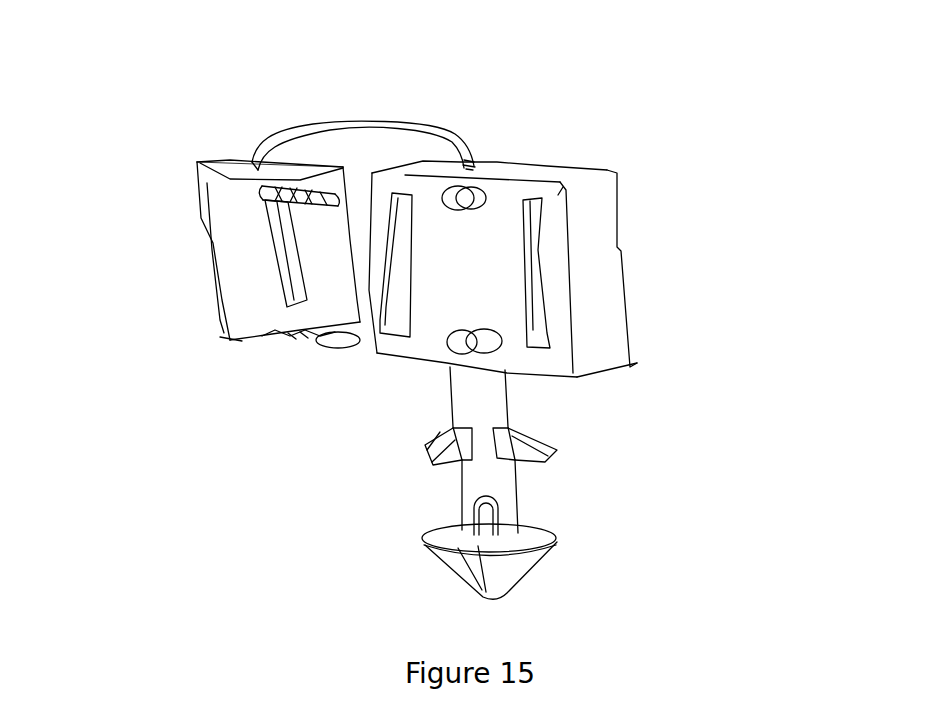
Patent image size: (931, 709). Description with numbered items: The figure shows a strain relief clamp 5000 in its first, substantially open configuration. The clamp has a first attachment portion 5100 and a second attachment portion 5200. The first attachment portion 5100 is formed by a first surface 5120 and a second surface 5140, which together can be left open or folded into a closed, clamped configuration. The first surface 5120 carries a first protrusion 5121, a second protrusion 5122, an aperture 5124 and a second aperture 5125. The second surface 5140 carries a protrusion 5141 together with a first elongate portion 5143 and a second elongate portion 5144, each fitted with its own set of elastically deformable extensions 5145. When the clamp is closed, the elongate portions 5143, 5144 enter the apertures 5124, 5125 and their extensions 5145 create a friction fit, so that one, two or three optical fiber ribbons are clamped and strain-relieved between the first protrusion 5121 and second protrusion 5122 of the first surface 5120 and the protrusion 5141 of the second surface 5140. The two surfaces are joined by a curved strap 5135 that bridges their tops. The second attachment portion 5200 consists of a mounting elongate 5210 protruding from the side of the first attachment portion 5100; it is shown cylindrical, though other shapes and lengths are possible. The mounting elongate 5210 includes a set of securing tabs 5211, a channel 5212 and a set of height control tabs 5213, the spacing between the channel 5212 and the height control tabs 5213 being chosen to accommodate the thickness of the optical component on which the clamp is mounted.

The strain relief clamp 5000 is at (438, 76).
The first attachment portion 5100 is at (612, 312).
The first surface 5120 is at (488, 225).
The first protrusion 5121 is at (537, 267).
The second protrusion 5122 is at (363, 337).
The aperture 5124 is at (467, 332).
The second aperture 5125 is at (470, 198).
The strap 5135 is at (463, 133).
The second surface 5140 is at (248, 222).
The protrusion 5141 is at (280, 268).
The first elongate portion 5143 is at (240, 332).
The second elongate portion 5144 is at (280, 178).
The elastically deformable extensions 5145 is at (300, 177).
The second attachment portion 5200 is at (485, 383).
The mounting elongate 5210 is at (510, 455).
The securing tabs 5211 is at (540, 556).
The channel 5212 is at (465, 547).
The height control tabs 5213 is at (453, 435).